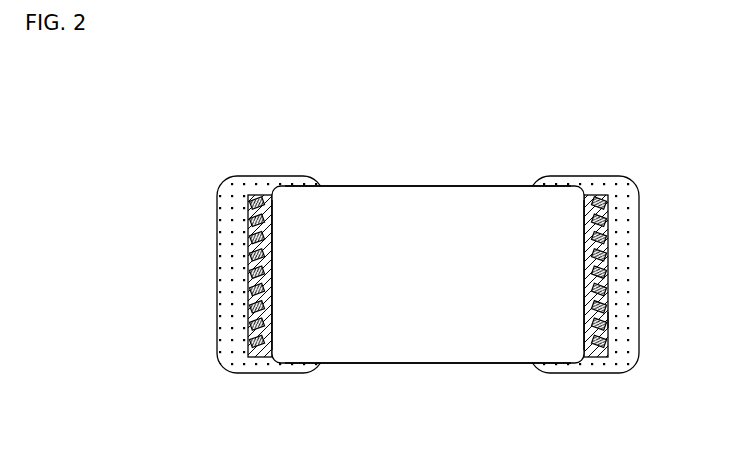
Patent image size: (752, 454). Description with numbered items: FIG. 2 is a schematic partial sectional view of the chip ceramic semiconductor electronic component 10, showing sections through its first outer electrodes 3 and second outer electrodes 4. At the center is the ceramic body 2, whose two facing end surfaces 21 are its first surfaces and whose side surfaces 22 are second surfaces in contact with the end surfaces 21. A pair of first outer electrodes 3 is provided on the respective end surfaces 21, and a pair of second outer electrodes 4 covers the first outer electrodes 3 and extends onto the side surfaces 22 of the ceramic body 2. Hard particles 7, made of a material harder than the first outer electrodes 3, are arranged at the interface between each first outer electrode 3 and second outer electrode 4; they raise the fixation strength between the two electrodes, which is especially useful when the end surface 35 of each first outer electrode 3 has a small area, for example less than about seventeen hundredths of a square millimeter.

The chip ceramic semiconductor electronic component 10 is at (585, 129).
The ceramic body 2 is at (435, 202).
The end surface 21 is at (273, 213).
The side surface 22 is at (384, 186).
The first outer electrode 3 is at (252, 267).
The second outer electrode 4 is at (237, 241).
The hard particle 7 is at (250, 305).
The end surface of first outer electrode 35 is at (608, 320).